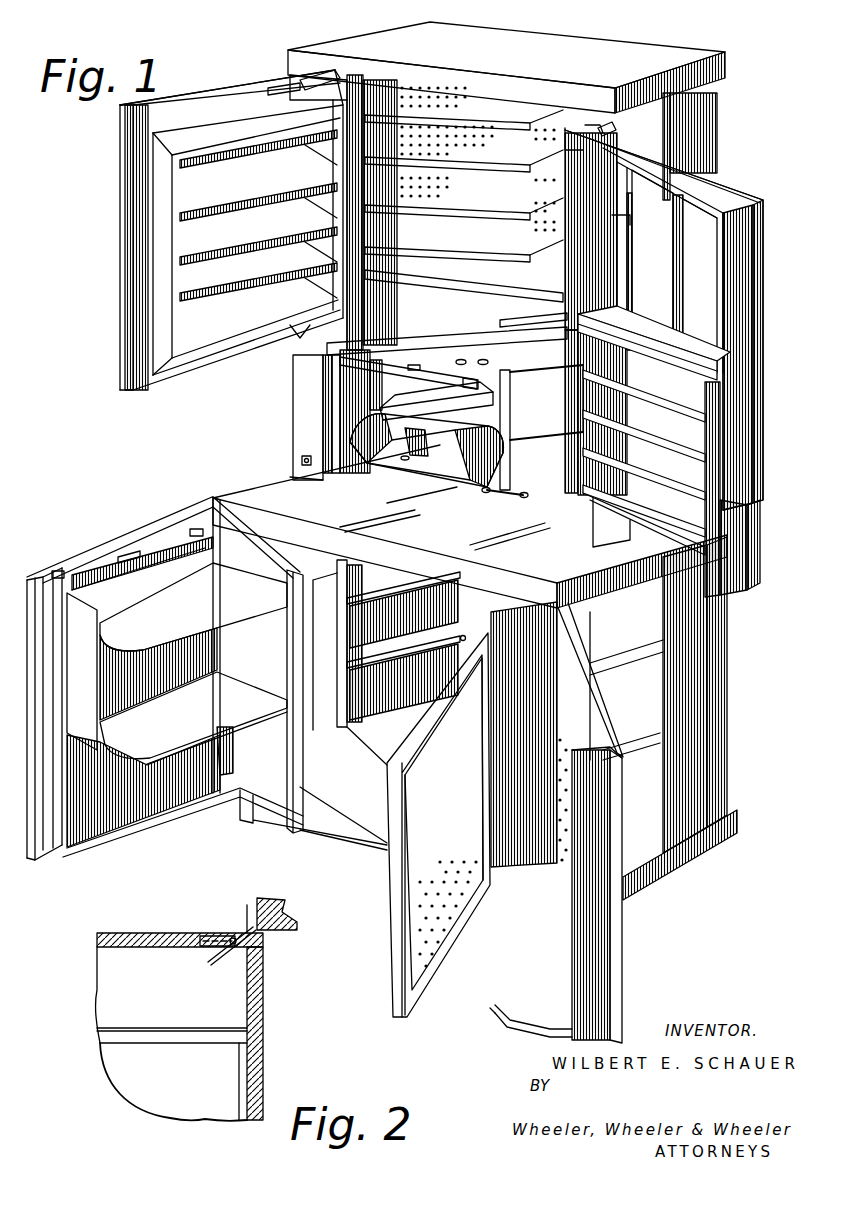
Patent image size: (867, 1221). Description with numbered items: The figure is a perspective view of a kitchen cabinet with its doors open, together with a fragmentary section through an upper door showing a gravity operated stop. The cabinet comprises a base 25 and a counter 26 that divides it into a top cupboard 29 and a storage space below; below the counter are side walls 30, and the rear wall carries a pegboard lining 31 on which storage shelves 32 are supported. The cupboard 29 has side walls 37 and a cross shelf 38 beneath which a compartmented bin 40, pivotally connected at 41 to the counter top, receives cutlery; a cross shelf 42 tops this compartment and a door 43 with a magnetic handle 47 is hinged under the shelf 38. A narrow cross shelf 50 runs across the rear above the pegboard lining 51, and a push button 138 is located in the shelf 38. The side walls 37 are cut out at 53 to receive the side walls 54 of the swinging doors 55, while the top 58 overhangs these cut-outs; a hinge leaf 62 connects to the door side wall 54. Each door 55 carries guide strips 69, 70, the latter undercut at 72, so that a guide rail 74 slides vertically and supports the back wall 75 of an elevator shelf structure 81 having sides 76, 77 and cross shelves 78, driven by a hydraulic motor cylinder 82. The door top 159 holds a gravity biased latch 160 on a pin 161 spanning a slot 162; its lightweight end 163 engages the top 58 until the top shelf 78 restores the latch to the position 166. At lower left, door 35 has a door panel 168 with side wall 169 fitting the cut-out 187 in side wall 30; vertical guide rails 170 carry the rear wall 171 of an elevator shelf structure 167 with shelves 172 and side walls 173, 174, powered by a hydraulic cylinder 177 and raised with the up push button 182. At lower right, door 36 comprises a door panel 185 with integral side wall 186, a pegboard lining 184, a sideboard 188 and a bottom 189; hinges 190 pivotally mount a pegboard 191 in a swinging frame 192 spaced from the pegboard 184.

In FIG. 1, the base 25 is at (637, 853).
In FIG. 1, the counter 26 is at (257, 490).
In FIG. 1, the top cupboard 29 is at (277, 62).
In FIG. 1, the side walls 30 is at (337, 577).
In FIG. 1, the pegboard lining 31 is at (645, 622).
In FIG. 1, the storage shelves 32 is at (427, 667).
In FIG. 1, the swinging door structure 35 is at (85, 553).
In FIG. 1, the swinging door structure 36 is at (503, 1030).
In FIG. 1, the side walls 37 is at (365, 78).
In FIG. 1, the cross shelf 38 is at (503, 342).
In FIG. 1, the compartmented bin 40 is at (447, 468).
In FIG. 1, the pivotal connection 41 is at (516, 497).
In FIG. 1, the cross shelf 42 is at (484, 411).
In FIG. 1, the door 43 is at (384, 366).
In FIG. 1, the handle 47 is at (415, 365).
In FIG. 1, the cross shelf 50 is at (550, 308).
In FIG. 1, the pegboard lining 51 is at (452, 248).
In FIG. 1, the cut-out 53 is at (342, 82).
In FIG. 1, the door side wall 54 is at (350, 133).
In FIG. 2, the door side wall 54 is at (263, 1018).
In FIG. 1, the swinging doors 55 is at (122, 318).
In FIG. 2, the swinging doors 55 is at (87, 996).
In FIG. 1, the top 58 is at (625, 65).
In FIG. 2, the top 58 is at (277, 915).
In FIG. 1, the hinge leaf 62 is at (462, 168).
In FIG. 1, the guide strip 69 is at (143, 332).
In FIG. 1, the guide strip 70 is at (300, 338).
In FIG. 1, the undercut 72 is at (632, 251).
In FIG. 1, the guide rail 74 is at (652, 260).
In FIG. 1, the back wall 75 is at (240, 200).
In FIG. 1, the side 76 is at (170, 282).
In FIG. 1, the side 77 is at (325, 190).
In FIG. 1, the cross shelves 78 is at (265, 258).
In FIG. 2, the cross shelves 78 is at (161, 1019).
In FIG. 1, the elevator shelf structure 81 is at (165, 228).
In FIG. 2, the elevator shelf structure 81 is at (233, 1073).
In FIG. 1, the hydraulic motor cylinder 82 is at (683, 277).
In FIG. 1, the push button 138 is at (458, 360).
In FIG. 1, the door top 159 is at (214, 102).
In FIG. 2, the door top 159 is at (150, 933).
In FIG. 1, the gravity biased latch 160 is at (284, 84).
In FIG. 2, the gravity biased latch 160 is at (222, 950).
In FIG. 2, the pin 161 is at (228, 937).
In FIG. 1, the slot 162 is at (320, 88).
In FIG. 2, the slot 162 is at (203, 950).
In FIG. 2, the lightweight end 163 is at (247, 905).
In FIG. 2, the dotted line position 166 is at (267, 938).
In FIG. 1, the elevator shelf structure 167 is at (128, 760).
In FIG. 1, the door panel 168 is at (33, 842).
In FIG. 1, the side wall 169 is at (287, 800).
In FIG. 1, the vertical guide rails 170 is at (203, 527).
In FIG. 1, the rear wall 171 is at (168, 538).
In FIG. 1, the shelves 172 is at (183, 627).
In FIG. 1, the side wall 173 is at (87, 722).
In FIG. 1, the side wall 174 is at (263, 670).
In FIG. 1, the hydraulic cylinder 177 is at (130, 562).
In FIG. 1, the up push button 182 is at (304, 461).
In FIG. 1, the pegboard lining 184 is at (562, 730).
In FIG. 1, the door panel 185 is at (617, 962).
In FIG. 1, the side wall 186 is at (473, 610).
In FIG. 1, the cut-out 187 is at (338, 672).
In FIG. 1, the sideboard 188 is at (587, 962).
In FIG. 1, the bottom 189 is at (532, 1036).
In FIG. 1, the hinges 190 is at (427, 620).
In FIG. 1, the pegboard 191 is at (410, 925).
In FIG. 1, the swinging frame 192 is at (441, 968).